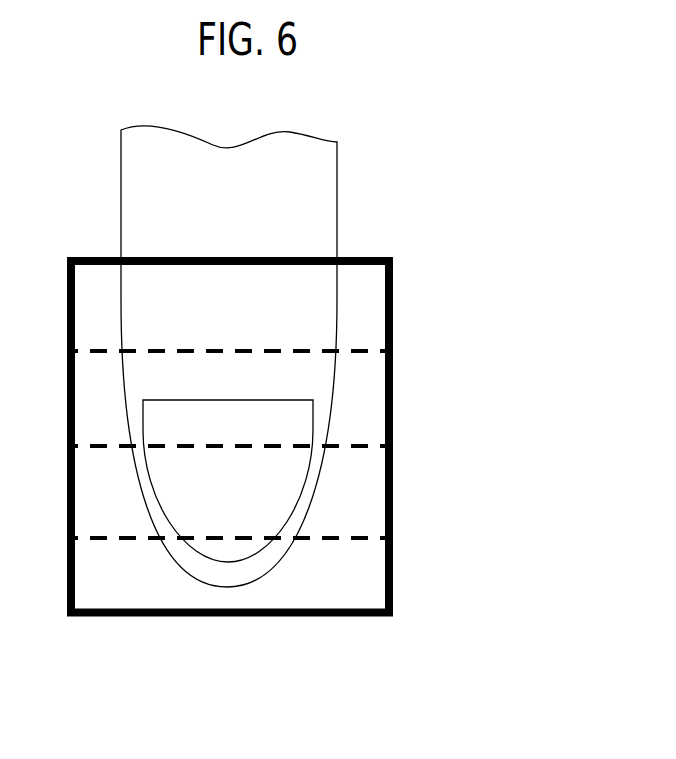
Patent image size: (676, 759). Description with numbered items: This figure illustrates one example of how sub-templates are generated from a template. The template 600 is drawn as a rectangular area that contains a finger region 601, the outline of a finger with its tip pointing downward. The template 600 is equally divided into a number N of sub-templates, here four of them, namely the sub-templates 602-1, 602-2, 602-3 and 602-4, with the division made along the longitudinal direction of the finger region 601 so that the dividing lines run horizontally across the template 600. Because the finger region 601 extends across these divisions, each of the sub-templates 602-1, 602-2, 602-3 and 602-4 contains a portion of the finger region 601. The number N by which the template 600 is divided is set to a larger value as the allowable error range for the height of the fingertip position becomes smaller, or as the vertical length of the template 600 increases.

The template 600 is at (403, 633).
The finger region 601 is at (290, 278).
The sub-template 602-1 is at (397, 537).
The sub-template 602-2 is at (397, 445).
The sub-template 602-3 is at (397, 350).
The sub-template 602-4 is at (397, 257).